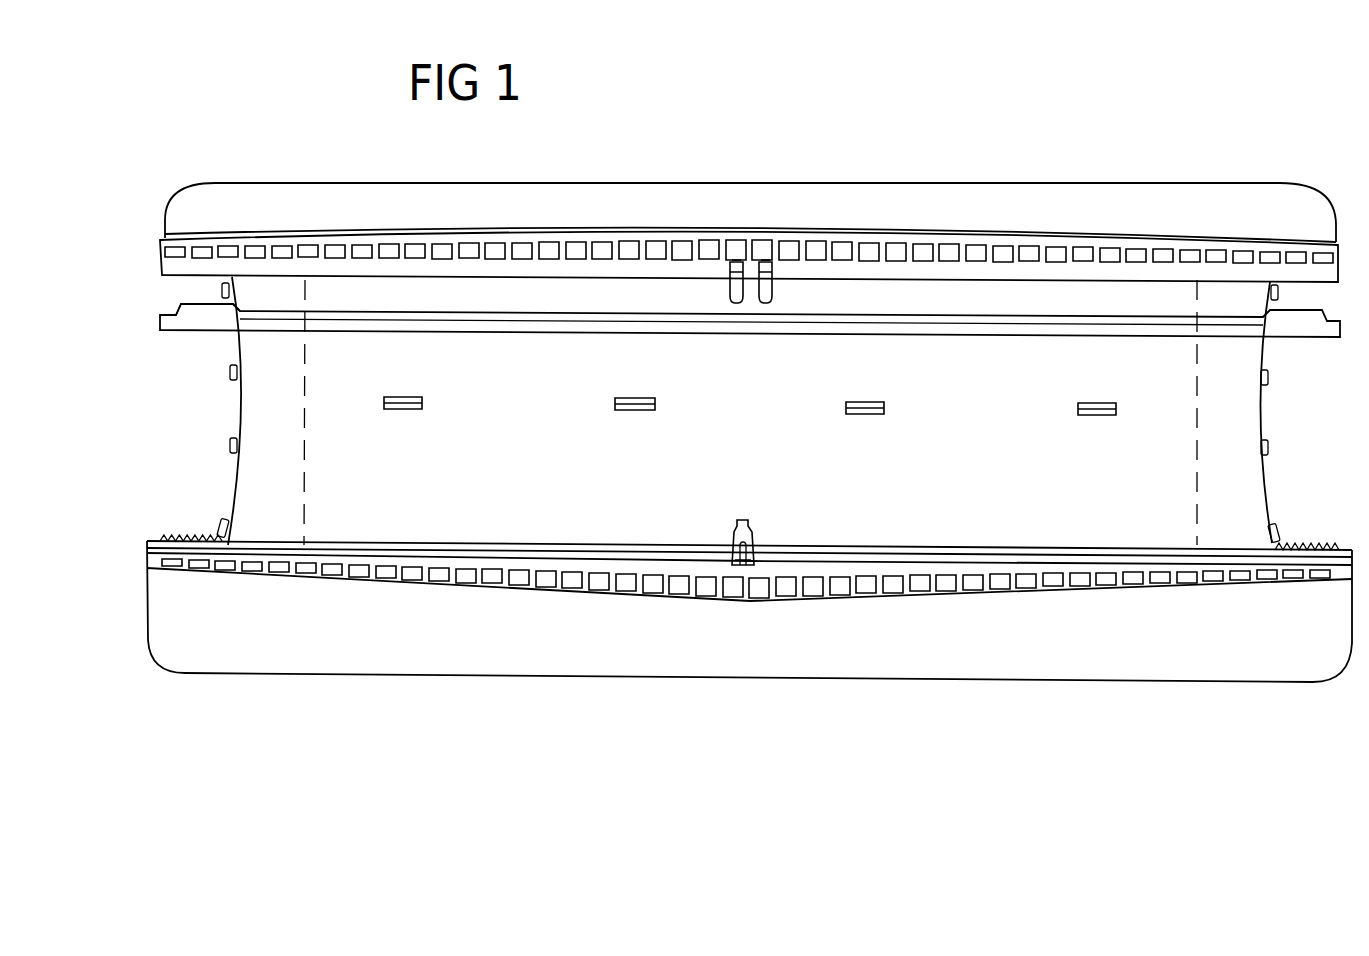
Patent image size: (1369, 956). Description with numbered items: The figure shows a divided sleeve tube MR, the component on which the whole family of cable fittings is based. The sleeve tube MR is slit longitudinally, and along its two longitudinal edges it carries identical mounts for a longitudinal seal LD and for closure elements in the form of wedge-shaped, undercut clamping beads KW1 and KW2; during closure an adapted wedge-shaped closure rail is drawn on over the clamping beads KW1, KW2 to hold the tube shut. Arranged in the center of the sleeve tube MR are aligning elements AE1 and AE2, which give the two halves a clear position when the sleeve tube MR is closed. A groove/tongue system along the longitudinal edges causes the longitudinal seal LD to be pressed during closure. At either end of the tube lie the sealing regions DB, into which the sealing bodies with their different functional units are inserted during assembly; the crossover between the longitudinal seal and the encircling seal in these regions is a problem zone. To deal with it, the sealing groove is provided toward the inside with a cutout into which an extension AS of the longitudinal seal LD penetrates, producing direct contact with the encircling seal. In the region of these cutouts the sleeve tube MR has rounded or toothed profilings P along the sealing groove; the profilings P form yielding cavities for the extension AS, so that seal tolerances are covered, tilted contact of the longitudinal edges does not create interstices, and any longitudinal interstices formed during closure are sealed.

The sleeve tube MR is at (748, 203).
The clamping bead KW2 is at (860, 232).
The clamping bead KW1 is at (855, 600).
The aligning element AE2 is at (772, 284).
The aligning element AE1 is at (733, 530).
The longitudinal seal LD is at (160, 318).
The extension AS is at (199, 305).
The sealing region DB is at (275, 421).
The profiling P is at (168, 537).